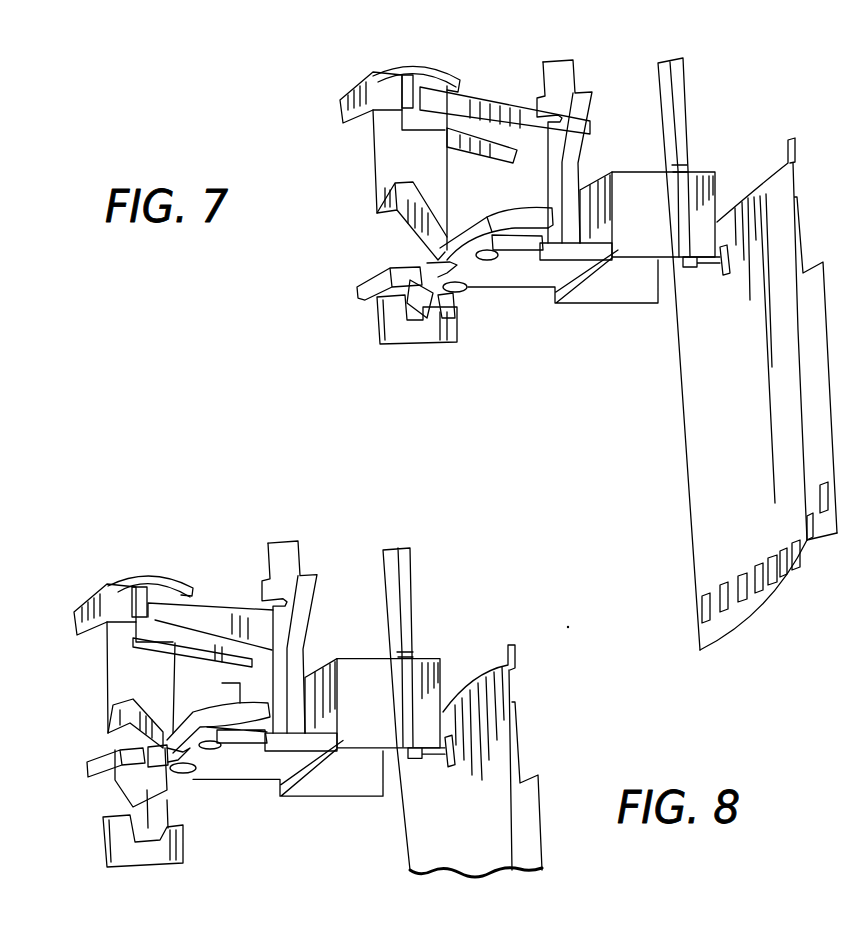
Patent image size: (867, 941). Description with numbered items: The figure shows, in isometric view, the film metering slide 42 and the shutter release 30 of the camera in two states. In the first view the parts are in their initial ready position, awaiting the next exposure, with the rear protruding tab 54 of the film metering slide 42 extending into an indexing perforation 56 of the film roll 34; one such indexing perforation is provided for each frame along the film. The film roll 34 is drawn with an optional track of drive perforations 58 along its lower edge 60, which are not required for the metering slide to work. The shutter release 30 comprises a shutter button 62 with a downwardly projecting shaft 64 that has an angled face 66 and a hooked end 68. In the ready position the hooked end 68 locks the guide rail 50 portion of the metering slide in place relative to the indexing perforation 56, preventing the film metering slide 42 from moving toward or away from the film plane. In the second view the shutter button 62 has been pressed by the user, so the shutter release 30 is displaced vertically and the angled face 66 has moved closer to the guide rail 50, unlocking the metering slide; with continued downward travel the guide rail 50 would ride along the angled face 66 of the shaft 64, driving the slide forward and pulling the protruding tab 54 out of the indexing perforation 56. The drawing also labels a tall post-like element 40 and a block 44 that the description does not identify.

In FIG. 7, the shutter release 30 is at (400, 70).
In FIG. 8, the shutter release 30 is at (137, 570).
In FIG. 7, the shutter button 62 is at (433, 78).
In FIG. 8, the shutter button 62 is at (190, 593).
In FIG. 7, the downwardly projecting shaft 64 is at (373, 148).
In FIG. 8, the downwardly projecting shaft 64 is at (107, 663).
In FIG. 7, the angled face 66 is at (393, 232).
In FIG. 8, the angled face 66 is at (107, 737).
In FIG. 7, the hooked end 68 is at (415, 330).
In FIG. 8, the hooked end 68 is at (160, 863).
In FIG. 7, the guide rail 50 is at (427, 306).
In FIG. 8, the guide rail 50 is at (150, 790).
In FIG. 7, the film metering slide 42 is at (562, 316).
In FIG. 8, the film metering slide 42 is at (264, 780).
In FIG. 7, the housing block 44 is at (658, 230).
In FIG. 8, the housing block 44 is at (385, 710).
In FIG. 7, the post 40 is at (666, 60).
In FIG. 8, the post 40 is at (402, 580).
In FIG. 7, the rear protruding tab 54 is at (727, 268).
In FIG. 8, the rear protruding tab 54 is at (445, 750).
In FIG. 7, the indexing perforation 56 is at (738, 250).
In FIG. 8, the indexing perforation 56 is at (467, 745).
In FIG. 7, the film roll 34 is at (713, 500).
In FIG. 8, the film roll 34 is at (487, 856).
In FIG. 7, the drive perforations 58 is at (701, 609).
In FIG. 7, the lower edge 60 is at (803, 585).